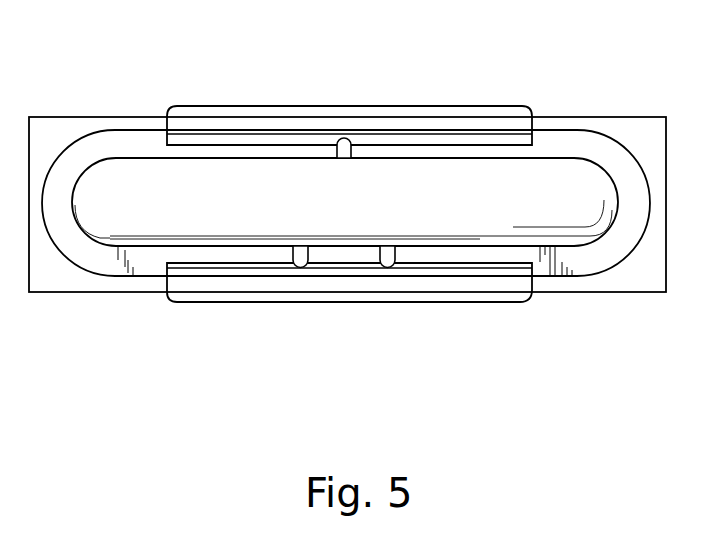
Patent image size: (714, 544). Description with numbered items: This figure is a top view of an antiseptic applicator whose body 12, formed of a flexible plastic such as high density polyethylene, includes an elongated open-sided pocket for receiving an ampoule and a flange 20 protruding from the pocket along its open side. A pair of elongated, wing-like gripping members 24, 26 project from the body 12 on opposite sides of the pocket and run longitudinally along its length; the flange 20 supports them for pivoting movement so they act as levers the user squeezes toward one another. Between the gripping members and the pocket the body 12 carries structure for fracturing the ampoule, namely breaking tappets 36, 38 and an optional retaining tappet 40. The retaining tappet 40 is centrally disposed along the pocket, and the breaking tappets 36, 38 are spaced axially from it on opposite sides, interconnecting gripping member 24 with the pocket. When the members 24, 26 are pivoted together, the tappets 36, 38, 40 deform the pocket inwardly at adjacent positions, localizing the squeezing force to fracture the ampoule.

The body 12 is at (573, 153).
The flange 20 is at (117, 145).
The gripping member 24 is at (425, 290).
The gripping member 26 is at (186, 108).
The breaking tappet 36 is at (395, 255).
The breaking tappet 38 is at (308, 251).
The retaining tappet 40 is at (337, 151).